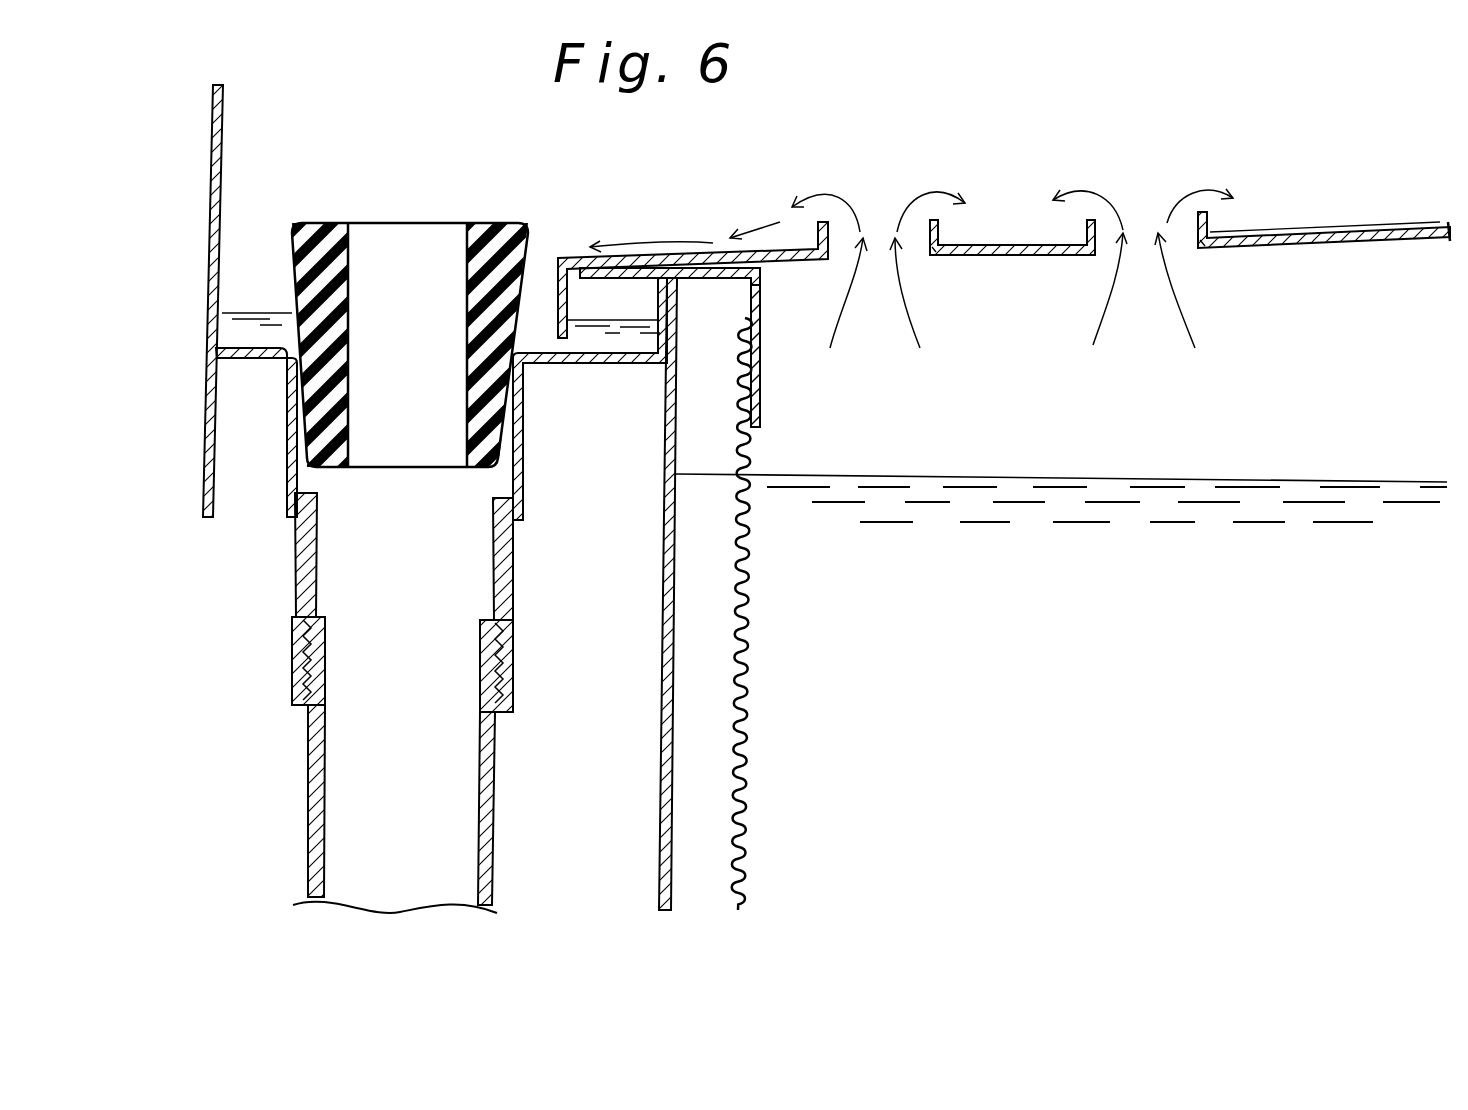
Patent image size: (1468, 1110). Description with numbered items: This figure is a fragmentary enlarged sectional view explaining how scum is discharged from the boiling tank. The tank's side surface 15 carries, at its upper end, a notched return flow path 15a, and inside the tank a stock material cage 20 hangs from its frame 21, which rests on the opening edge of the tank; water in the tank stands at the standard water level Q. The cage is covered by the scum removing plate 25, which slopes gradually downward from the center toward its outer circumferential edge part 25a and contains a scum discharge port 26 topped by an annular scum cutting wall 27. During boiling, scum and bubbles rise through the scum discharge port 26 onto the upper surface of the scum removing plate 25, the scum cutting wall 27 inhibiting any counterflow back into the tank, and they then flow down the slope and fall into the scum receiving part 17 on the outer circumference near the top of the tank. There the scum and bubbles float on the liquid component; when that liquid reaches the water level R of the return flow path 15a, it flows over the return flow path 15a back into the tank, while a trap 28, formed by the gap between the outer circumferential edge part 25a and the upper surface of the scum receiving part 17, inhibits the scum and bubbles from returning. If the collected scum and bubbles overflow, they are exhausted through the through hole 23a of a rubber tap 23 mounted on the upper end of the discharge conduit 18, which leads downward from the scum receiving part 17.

The side surface 15 is at (660, 776).
The return flow path 15a is at (683, 283).
The scum receiving part 17 is at (238, 346).
The discharge conduit 18 is at (308, 785).
The stock material cage 20 is at (743, 765).
The frame 21 is at (762, 397).
The rubber tap 23 is at (317, 227).
The through hole 23a is at (350, 247).
The scum removing plate 25 is at (1367, 233).
The outer circumferential edge part 25a is at (555, 307).
The scum discharge port 26 is at (925, 254).
The scum cutting wall 27 is at (940, 228).
The trap 28 is at (590, 338).
The standard water level Q is at (1288, 480).
The water level R is at (260, 312).